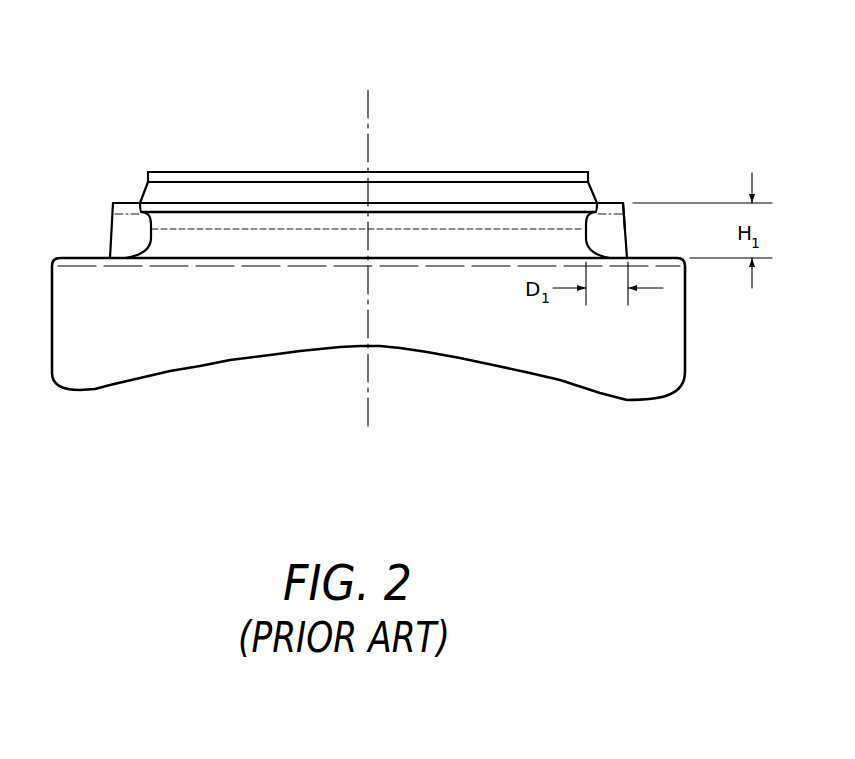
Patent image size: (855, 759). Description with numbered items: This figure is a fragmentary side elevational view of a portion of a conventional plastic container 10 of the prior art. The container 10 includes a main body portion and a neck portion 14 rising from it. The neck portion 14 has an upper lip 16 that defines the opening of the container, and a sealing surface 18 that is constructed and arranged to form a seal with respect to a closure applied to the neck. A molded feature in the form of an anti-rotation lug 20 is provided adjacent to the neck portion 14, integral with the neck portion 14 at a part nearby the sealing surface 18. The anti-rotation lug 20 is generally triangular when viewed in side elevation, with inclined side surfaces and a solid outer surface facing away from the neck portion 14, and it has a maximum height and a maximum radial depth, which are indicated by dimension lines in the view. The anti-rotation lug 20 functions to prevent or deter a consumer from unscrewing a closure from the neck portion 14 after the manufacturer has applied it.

The conventional plastic container 10 is at (518, 90).
The neck portion 14 is at (140, 242).
The upper lip 16 is at (395, 172).
The sealing surface 18 is at (212, 190).
The anti-rotation lug 20 is at (626, 192).